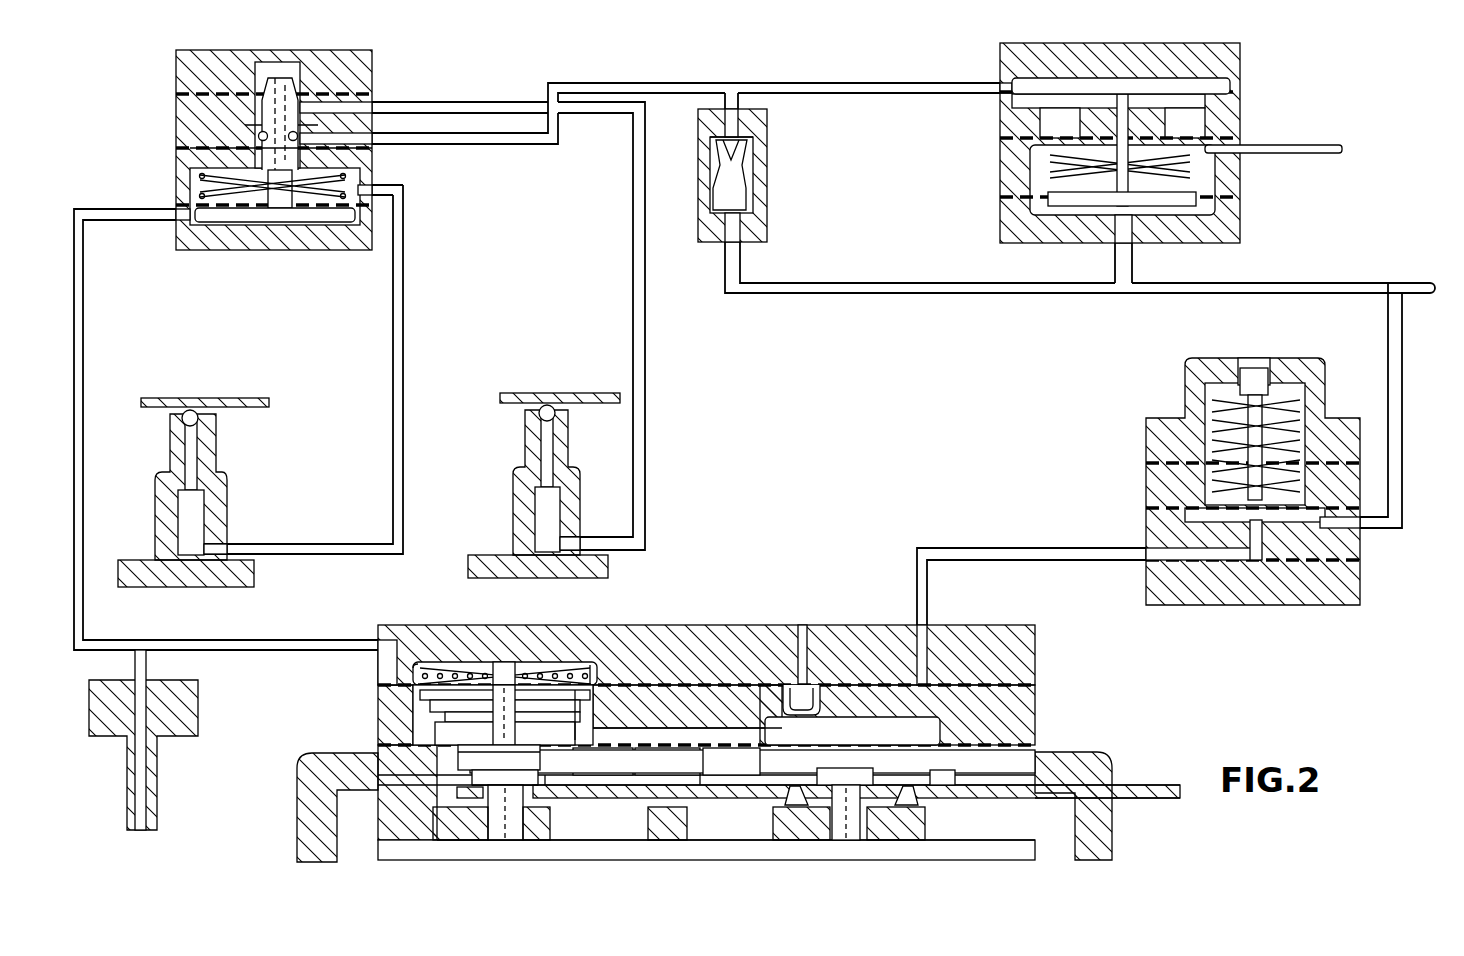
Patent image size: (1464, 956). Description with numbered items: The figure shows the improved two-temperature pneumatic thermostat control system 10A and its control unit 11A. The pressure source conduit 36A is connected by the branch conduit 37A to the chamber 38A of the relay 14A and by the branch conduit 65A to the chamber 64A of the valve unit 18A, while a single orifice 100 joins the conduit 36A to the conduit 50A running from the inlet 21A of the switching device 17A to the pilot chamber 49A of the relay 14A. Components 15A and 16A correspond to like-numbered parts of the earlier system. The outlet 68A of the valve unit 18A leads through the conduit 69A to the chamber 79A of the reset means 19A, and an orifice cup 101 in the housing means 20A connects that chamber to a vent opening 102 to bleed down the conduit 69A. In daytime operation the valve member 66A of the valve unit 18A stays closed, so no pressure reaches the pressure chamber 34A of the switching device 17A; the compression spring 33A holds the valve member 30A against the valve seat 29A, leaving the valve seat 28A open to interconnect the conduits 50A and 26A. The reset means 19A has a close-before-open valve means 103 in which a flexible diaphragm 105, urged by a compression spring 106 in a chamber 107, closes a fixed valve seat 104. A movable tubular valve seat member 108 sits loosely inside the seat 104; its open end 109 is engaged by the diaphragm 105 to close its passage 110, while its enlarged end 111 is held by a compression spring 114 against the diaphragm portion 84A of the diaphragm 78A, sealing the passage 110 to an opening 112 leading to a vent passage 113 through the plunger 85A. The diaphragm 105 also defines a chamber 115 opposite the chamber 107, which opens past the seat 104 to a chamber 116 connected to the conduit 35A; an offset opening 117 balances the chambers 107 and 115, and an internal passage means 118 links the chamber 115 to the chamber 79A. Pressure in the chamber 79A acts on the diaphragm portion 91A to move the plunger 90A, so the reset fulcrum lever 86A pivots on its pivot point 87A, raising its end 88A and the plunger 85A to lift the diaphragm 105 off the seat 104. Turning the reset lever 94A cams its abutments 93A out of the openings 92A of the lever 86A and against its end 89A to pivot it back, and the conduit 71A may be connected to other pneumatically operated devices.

The pneumatic thermostat control system 10A is at (1303, 63).
The pneumatic thermostat control unit 11A is at (1310, 109).
The relay 14A is at (1000, 57).
The brake cylinder 15A is at (513, 478).
The brake cylinder 16A is at (225, 478).
The switching device 17A is at (378, 65).
The valve unit 18A is at (1185, 373).
The reset means 19A is at (1037, 660).
The housing means 20A is at (965, 625).
The inlet 21A is at (358, 158).
The conduit 26A is at (633, 280).
The valve seat 28A is at (252, 128).
The valve seat 29A is at (250, 168).
The valve member 30A is at (258, 142).
The compression spring 33A is at (210, 180).
The pressure chamber 34A is at (295, 215).
The conduit 35A is at (270, 640).
The pressure source conduit 36A is at (1320, 283).
The branch conduit 37A is at (1133, 265).
The chamber 38A is at (1205, 192).
The pilot chamber 49A is at (1125, 82).
The conduit 50A is at (805, 83).
The chamber 64A is at (1310, 525).
The branch conduit 65A is at (1390, 328).
The valve member 66A is at (1215, 508).
The outlet 68A is at (1175, 562).
The conduit 69A is at (1025, 505).
The conduit 71A is at (150, 668).
The diaphragm 78A is at (667, 762).
The chamber 79A is at (930, 738).
The diaphragm portion 84A is at (527, 762).
The plunger 85A is at (546, 792).
The reset fulcrum lever 86A is at (715, 738).
The pivot point 87A is at (667, 800).
The lever end 88A is at (473, 810).
The lever end 89A is at (937, 786).
The plunger 90A is at (845, 832).
The diaphragm portion 91A is at (820, 690).
The openings 92A is at (1055, 740).
The abutments 93A is at (795, 806).
The reset lever 94A is at (1005, 815).
The orifice 100 is at (752, 160).
The orifice cup 101 is at (840, 690).
The vent opening 102 is at (802, 635).
The close-before-open valve means 103 is at (450, 720).
The fixed valve seat 104 is at (425, 703).
The flexible diaphragm 105 is at (422, 684).
The compression spring 106 is at (450, 678).
The chamber 107 is at (408, 665).
The tubular valve seat member 108 is at (470, 722).
The open end 109 is at (497, 682).
The passage 110 is at (508, 682).
The open end 111 is at (467, 755).
The opening 112 is at (472, 790).
The vent passage 113 is at (480, 848).
The compression spring 114 is at (572, 720).
The chamber 115 is at (595, 668).
The chamber 116 is at (548, 752).
The offset opening 117 is at (590, 690).
The internal passage means 118 is at (690, 745).